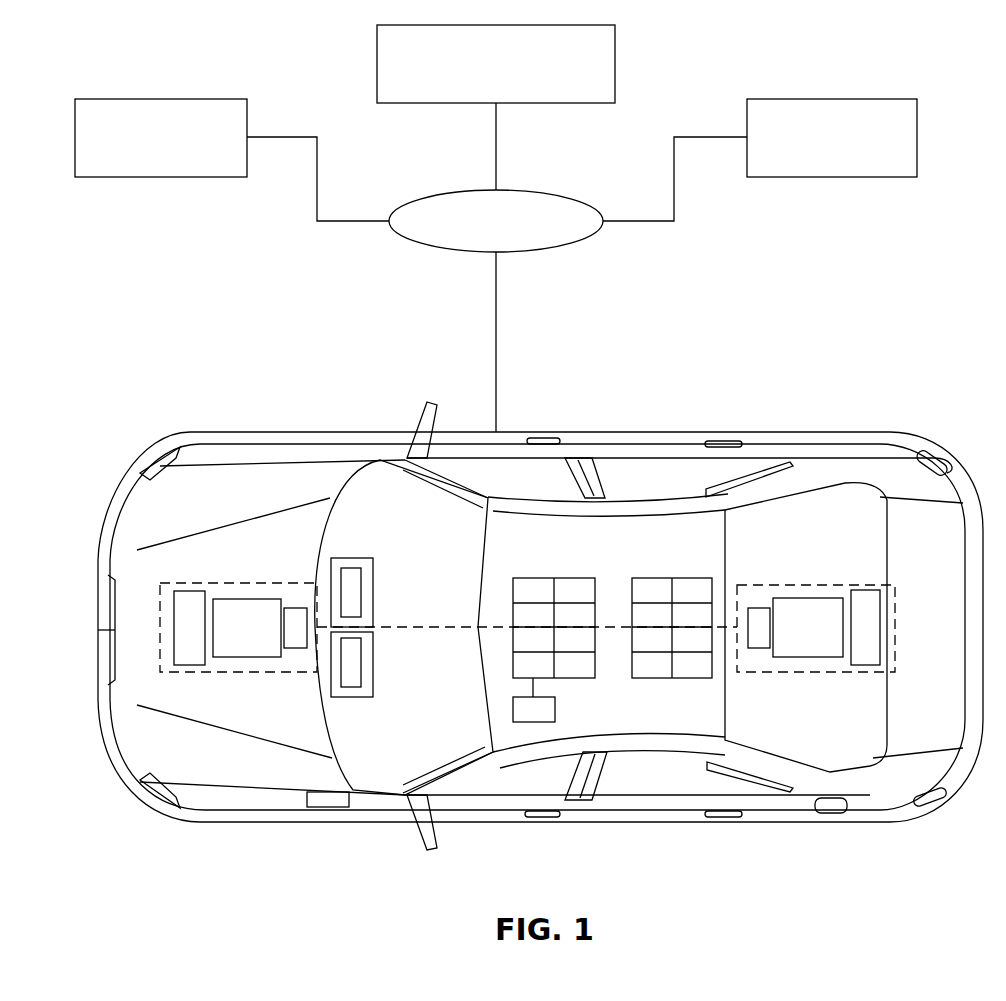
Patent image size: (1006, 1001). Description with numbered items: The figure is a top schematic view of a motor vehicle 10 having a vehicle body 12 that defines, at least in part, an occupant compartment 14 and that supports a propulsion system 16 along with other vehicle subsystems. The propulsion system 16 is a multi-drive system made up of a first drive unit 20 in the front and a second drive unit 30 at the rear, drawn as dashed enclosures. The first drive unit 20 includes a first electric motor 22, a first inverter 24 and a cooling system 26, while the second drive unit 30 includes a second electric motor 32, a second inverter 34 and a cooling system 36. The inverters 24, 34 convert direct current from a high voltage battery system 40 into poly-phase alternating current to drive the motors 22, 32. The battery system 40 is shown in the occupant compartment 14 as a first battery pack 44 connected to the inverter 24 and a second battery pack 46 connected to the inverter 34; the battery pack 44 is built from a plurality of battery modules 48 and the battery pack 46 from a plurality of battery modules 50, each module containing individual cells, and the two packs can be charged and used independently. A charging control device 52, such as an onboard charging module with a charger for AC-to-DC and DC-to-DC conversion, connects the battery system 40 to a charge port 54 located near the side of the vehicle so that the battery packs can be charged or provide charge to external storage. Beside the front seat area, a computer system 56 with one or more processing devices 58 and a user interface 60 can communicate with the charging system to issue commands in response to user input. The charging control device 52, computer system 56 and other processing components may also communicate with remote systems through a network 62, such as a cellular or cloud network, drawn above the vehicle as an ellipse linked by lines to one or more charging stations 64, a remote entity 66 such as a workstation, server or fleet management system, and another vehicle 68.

The motor vehicle 10 is at (88, 356).
The vehicle body 12 is at (585, 431).
The occupant compartment 14 is at (627, 742).
The propulsion system 16 is at (238, 710).
The first drive unit 20 is at (200, 583).
The first electric motor 22 is at (250, 598).
The first inverter 24 is at (300, 648).
The cooling system 26 is at (190, 666).
The second drive unit 30 is at (837, 584).
The second electric motor 32 is at (818, 597).
The second inverter 34 is at (770, 660).
The cooling system 36 is at (893, 630).
The battery system 40 is at (641, 627).
The first battery pack 44 is at (590, 578).
The second battery pack 46 is at (690, 679).
The battery modules 48 is at (577, 588).
The battery modules 50 is at (657, 590).
The charging control device 52 is at (555, 718).
The charge port 54 is at (327, 790).
The computer system 56 is at (373, 535).
The processing devices 58 is at (362, 592).
The user interface 60 is at (362, 662).
The network 62 is at (481, 235).
The charging stations 64 is at (145, 152).
The remote entity 66 is at (481, 78).
The another vehicle 68 is at (817, 152).